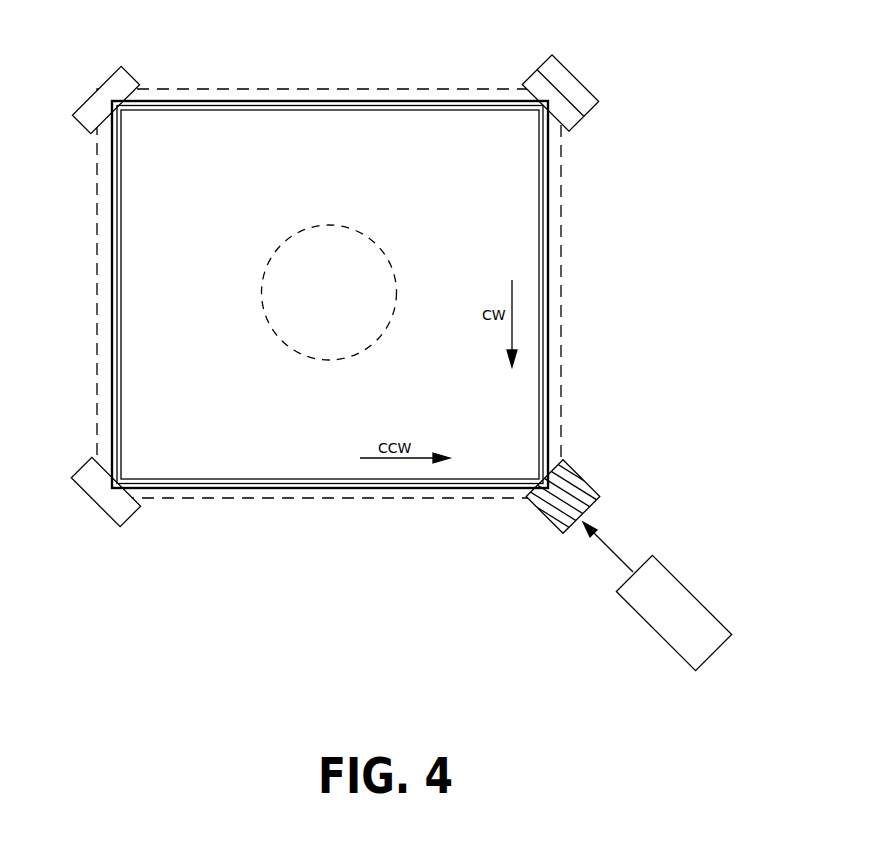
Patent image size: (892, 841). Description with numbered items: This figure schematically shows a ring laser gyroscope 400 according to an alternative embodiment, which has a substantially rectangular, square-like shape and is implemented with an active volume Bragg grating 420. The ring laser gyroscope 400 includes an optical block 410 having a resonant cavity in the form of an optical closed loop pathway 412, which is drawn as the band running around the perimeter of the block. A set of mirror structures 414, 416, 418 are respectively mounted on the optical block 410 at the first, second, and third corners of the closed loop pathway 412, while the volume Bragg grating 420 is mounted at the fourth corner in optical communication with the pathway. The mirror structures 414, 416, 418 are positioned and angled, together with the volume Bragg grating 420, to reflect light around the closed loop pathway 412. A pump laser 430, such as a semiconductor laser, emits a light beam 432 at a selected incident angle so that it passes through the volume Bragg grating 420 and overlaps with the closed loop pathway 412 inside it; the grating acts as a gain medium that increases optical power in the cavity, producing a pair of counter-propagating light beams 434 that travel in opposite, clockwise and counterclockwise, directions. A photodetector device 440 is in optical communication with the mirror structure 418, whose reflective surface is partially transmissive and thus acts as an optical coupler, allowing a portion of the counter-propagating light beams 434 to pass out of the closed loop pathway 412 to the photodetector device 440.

The ring laser gyroscope 400 is at (688, 218).
The optical block 410 is at (98, 312).
The optical closed loop pathway 412 is at (312, 477).
The mirror structure 414 is at (90, 497).
The mirror structure 416 is at (96, 88).
The mirror structure 418 is at (552, 71).
The volume Bragg grating 420 is at (586, 478).
The pump laser 430 is at (642, 620).
The light beam 432 is at (618, 552).
The counter-propagating light beams 434 is at (338, 107).
The photodetector device 440 is at (590, 82).